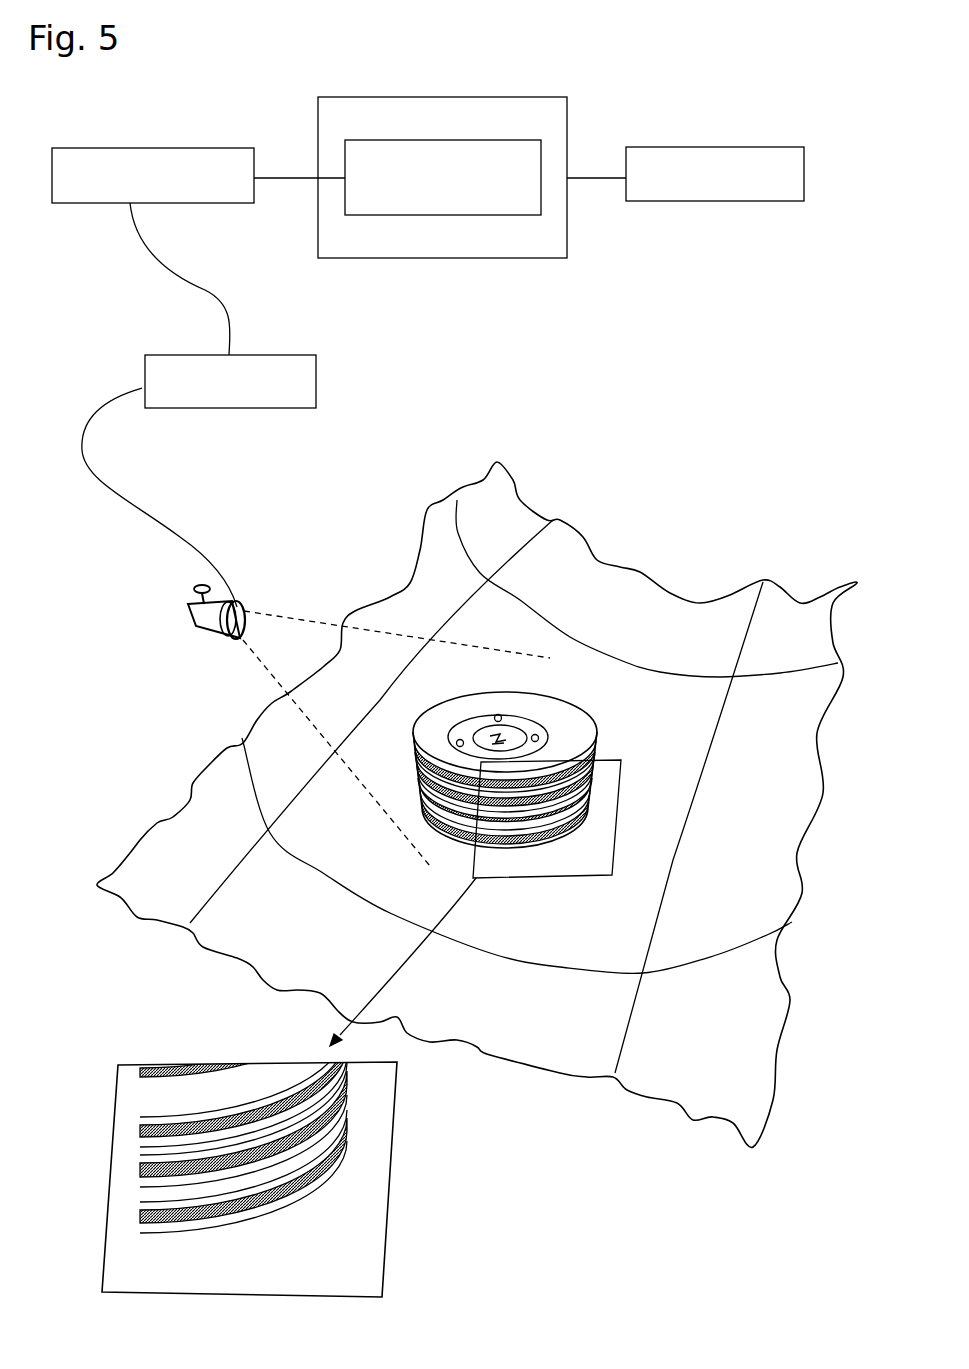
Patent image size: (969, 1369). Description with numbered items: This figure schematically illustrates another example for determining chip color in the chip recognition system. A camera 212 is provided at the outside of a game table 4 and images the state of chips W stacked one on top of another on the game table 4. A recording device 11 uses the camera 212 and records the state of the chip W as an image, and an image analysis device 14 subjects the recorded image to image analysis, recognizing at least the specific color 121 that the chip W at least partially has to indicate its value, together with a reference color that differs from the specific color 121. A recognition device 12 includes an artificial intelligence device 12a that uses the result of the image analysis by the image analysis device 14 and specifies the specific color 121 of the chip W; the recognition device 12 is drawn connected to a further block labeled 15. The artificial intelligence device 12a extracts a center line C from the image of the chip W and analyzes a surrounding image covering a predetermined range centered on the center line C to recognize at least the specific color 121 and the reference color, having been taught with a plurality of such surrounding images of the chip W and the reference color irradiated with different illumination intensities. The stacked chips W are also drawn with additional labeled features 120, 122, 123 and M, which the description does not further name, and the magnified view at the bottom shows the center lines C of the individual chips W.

The image analysis device 14 is at (112, 150).
The recognition device 12 is at (318, 143).
The artificial intelligence device 12a is at (512, 210).
The output device 15 is at (781, 152).
The recording device 11 is at (304, 398).
The camera 212 is at (200, 626).
The game table 4 is at (630, 648).
The disc 120 is at (565, 722).
The specific color 121 is at (415, 766).
The groove 122 is at (416, 758).
The center portion 123 is at (508, 735).
The mark M is at (540, 730).
The chip W is at (448, 716).
The center line C is at (112, 1128).